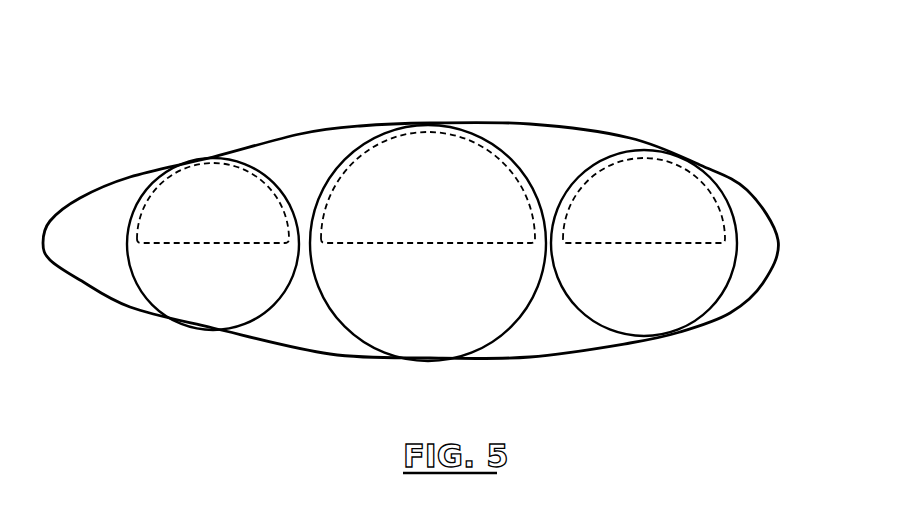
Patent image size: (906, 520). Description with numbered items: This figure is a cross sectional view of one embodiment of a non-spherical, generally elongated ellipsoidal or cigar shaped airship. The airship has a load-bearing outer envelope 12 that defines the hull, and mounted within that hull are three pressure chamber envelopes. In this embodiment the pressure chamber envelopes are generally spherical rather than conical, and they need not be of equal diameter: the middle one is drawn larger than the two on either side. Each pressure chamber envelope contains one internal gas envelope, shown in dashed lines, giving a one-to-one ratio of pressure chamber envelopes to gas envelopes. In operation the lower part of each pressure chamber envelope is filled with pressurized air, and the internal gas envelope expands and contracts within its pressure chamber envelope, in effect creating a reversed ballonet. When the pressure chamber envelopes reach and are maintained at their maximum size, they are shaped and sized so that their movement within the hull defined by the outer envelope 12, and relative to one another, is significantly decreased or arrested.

The load-bearing outer envelope 12 is at (770, 212).